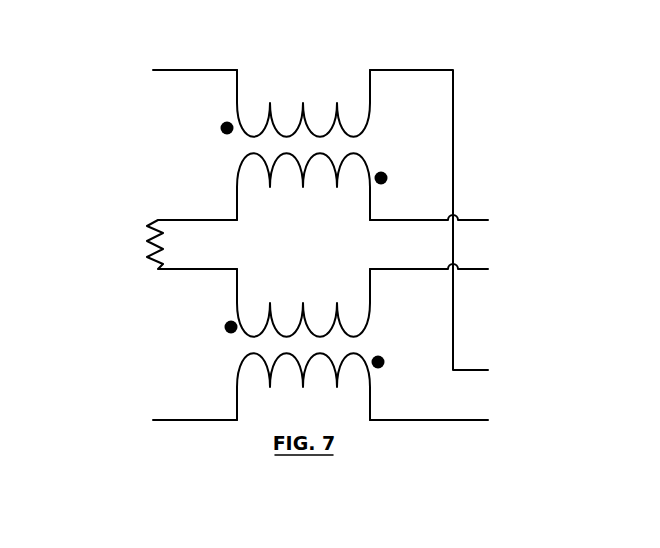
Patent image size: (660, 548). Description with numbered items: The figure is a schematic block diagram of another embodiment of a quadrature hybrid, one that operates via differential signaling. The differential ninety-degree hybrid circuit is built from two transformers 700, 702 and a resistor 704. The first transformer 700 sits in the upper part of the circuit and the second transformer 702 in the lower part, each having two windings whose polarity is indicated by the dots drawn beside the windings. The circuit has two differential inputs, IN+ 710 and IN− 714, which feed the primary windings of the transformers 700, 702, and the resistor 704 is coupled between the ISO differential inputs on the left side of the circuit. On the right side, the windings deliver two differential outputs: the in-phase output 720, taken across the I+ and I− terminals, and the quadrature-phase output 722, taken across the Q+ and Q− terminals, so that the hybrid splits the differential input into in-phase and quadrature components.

The transformer 700 is at (297, 88).
The transformer 702 is at (290, 297).
The resistor 704 is at (192, 244).
The differential input IN+ 710 is at (188, 46).
The differential input IN− 714 is at (188, 396).
The in-phase output 720 is at (495, 245).
The quadrature-phase output 722 is at (498, 250).